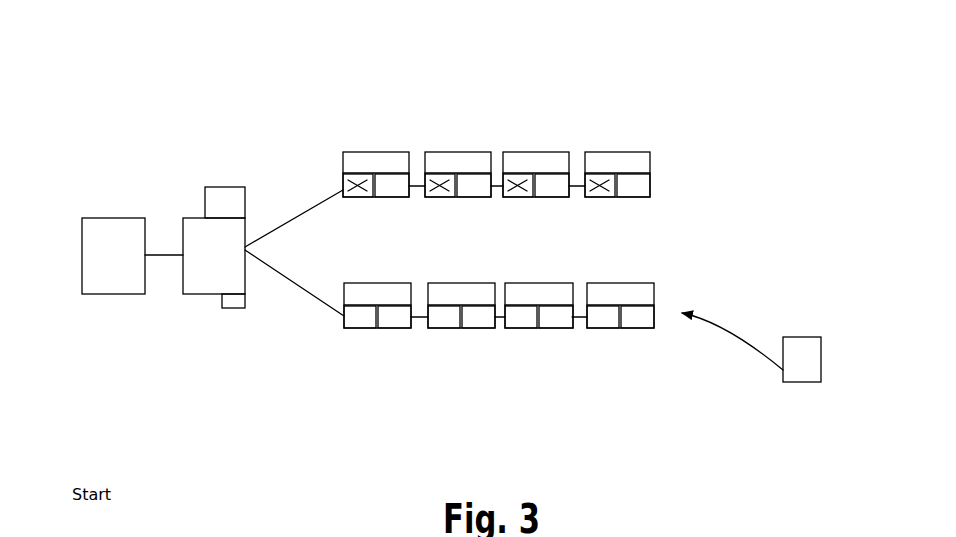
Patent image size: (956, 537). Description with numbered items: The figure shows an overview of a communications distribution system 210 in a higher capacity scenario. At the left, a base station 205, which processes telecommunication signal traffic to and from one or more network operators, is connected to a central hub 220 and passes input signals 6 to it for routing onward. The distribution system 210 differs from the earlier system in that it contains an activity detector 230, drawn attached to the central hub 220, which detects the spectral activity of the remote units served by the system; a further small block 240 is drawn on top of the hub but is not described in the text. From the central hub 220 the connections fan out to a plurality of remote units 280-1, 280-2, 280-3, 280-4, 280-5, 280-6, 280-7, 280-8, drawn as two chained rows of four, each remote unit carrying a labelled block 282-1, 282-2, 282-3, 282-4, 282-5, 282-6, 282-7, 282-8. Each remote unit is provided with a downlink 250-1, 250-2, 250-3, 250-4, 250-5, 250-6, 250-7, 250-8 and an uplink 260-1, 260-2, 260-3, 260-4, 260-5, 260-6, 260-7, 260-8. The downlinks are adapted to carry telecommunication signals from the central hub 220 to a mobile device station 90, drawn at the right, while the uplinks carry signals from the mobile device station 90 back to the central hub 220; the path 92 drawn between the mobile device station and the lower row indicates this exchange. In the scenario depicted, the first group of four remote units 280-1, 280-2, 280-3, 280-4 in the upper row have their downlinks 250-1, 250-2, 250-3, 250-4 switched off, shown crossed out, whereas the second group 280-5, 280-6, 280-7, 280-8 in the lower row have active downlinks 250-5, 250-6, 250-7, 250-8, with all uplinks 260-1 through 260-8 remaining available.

The input signals 6 is at (168, 250).
The mobile device station 90 is at (802, 382).
The signal path 92 is at (735, 332).
The base station 205 is at (97, 295).
The communications distribution system 210 is at (173, 126).
The central hub 220 is at (199, 295).
The activity detector 230 is at (235, 308).
The interface 240 is at (222, 187).
The downlink 250-1 is at (352, 198).
The downlink 250-2 is at (445, 197).
The downlink 250-3 is at (523, 197).
The downlink 250-4 is at (597, 183).
The downlink 250-5 is at (347, 328).
The downlink 250-6 is at (445, 328).
The downlink 250-7 is at (520, 328).
The downlink 250-8 is at (607, 328).
The uplink 260-1 is at (397, 187).
The uplink 260-2 is at (482, 197).
The uplink 260-3 is at (563, 197).
The uplink 260-4 is at (647, 185).
The uplink 260-5 is at (398, 317).
The uplink 260-6 is at (478, 328).
The uplink 260-7 is at (557, 320).
The uplink 260-8 is at (655, 328).
The remote unit 280-1 is at (352, 87).
The remote unit 280-2 is at (447, 82).
The remote unit 280-3 is at (532, 92).
The remote unit 280-4 is at (602, 80).
The remote unit 280-5 is at (357, 393).
The remote unit 280-6 is at (457, 398).
The remote unit 280-7 is at (543, 412).
The remote unit 280-8 is at (673, 400).
The frame header 282-1 is at (377, 162).
The frame header 282-2 is at (460, 150).
The frame header 282-3 is at (536, 152).
The frame header 282-4 is at (620, 162).
The frame header 282-5 is at (378, 293).
The frame header 282-6 is at (463, 293).
The frame header 282-7 is at (572, 272).
The frame header 282-8 is at (618, 295).